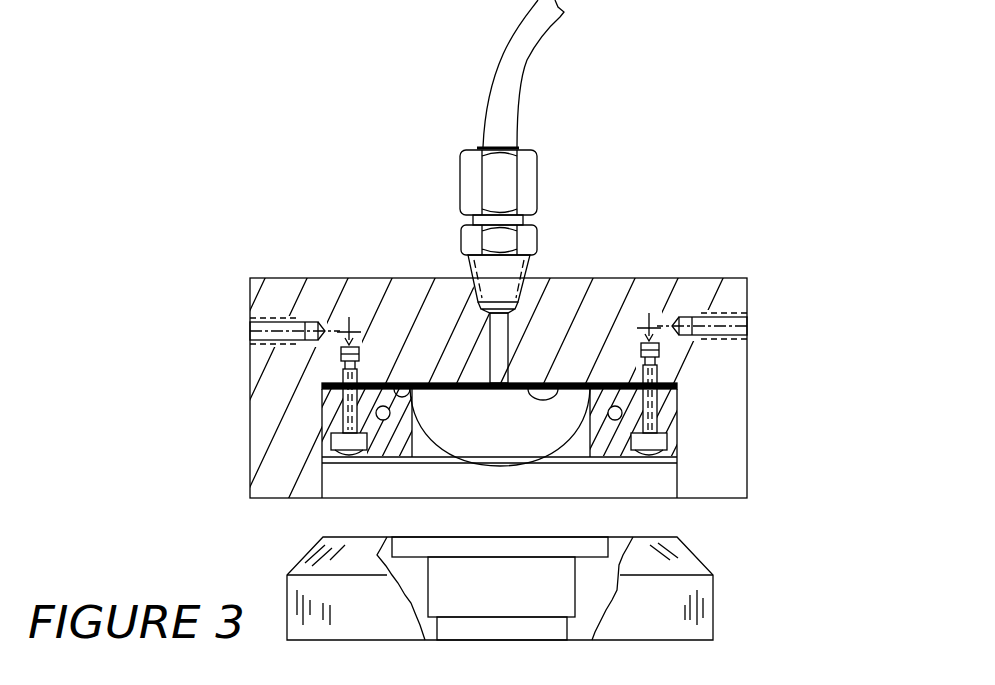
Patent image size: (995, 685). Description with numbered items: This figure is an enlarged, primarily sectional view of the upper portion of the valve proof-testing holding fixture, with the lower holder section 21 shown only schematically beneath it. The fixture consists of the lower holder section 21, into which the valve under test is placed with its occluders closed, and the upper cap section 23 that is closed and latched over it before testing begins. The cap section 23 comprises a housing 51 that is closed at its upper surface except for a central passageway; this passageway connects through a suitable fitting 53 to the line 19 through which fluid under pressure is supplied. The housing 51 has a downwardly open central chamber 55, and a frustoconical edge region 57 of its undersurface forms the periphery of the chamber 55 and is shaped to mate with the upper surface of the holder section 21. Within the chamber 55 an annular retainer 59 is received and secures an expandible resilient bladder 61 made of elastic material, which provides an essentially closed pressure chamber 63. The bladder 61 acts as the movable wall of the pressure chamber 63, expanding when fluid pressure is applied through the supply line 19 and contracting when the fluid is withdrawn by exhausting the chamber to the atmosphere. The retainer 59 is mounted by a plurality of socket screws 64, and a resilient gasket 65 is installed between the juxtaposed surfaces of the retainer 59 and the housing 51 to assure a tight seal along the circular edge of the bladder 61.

The conduit means 19 is at (520, 55).
The lower holder section 21 is at (713, 582).
The upper cap section 23 is at (275, 190).
The housing 51 is at (570, 297).
The fitting 53 is at (533, 165).
The central chamber 55 is at (451, 417).
The frustoconical edge region 57 is at (308, 474).
The annular retainer 59 is at (397, 440).
The expandible resilient bladder 61 is at (517, 466).
The pressure chamber 63 is at (516, 435).
The socket screws 64 is at (340, 375).
The resilient gasket 65 is at (577, 383).